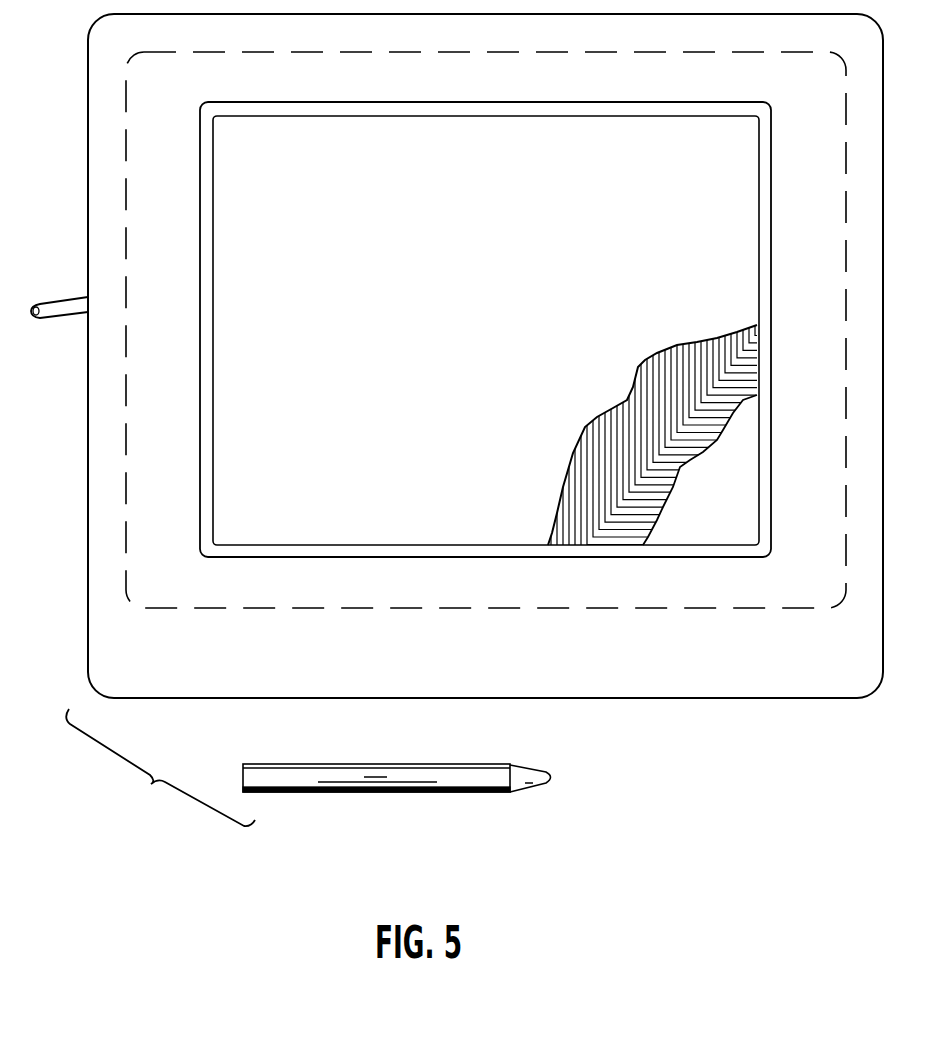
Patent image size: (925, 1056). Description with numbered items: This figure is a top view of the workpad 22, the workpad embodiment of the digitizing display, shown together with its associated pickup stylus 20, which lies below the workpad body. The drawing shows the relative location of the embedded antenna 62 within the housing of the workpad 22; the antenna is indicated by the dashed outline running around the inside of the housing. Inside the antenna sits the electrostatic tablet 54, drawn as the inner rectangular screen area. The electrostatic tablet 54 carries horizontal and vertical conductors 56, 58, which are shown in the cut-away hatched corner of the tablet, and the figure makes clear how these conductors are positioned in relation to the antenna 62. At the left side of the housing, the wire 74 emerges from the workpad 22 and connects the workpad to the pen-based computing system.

The pickup stylus 20 is at (476, 778).
The workpad 22 is at (78, 477).
The electrostatic tablet 54 is at (484, 309).
The horizontal conductors 56 is at (625, 532).
The vertical conductors 58 is at (666, 360).
The embedded antenna 62 is at (843, 239).
The wire 74 is at (53, 322).